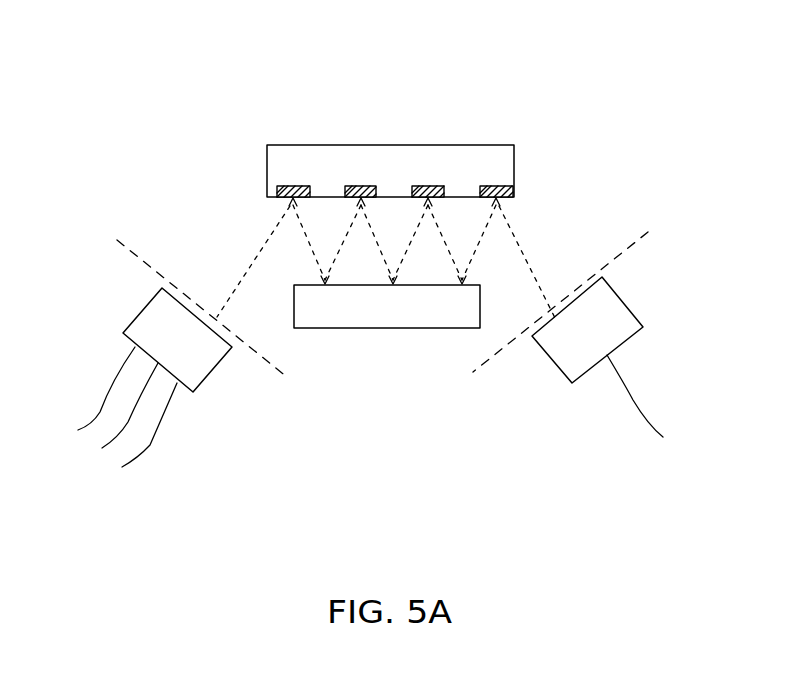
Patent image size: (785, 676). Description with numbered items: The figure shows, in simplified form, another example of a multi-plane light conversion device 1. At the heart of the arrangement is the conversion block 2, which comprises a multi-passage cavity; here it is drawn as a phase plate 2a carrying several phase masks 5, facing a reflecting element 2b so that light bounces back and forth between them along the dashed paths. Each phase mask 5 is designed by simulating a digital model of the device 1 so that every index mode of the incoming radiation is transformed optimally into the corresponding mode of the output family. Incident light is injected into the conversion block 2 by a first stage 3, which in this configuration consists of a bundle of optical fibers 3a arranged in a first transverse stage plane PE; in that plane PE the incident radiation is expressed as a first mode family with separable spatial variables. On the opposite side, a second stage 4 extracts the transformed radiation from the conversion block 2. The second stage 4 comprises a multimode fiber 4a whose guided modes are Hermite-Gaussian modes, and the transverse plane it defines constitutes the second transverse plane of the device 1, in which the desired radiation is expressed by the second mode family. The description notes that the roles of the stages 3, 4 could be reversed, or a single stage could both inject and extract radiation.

The MPLC device 1 is at (355, 442).
The conversion block 2 is at (607, 110).
The phase plate 2a is at (514, 170).
The receiver / detector 2b is at (450, 328).
The phase masks 5 is at (265, 187).
The first stage 3 is at (140, 310).
The bundle of optical fibers 3a is at (128, 425).
The second stage 4 is at (623, 298).
The multimode fiber 4a is at (635, 398).
The transverse stage plane PE is at (377, 287).